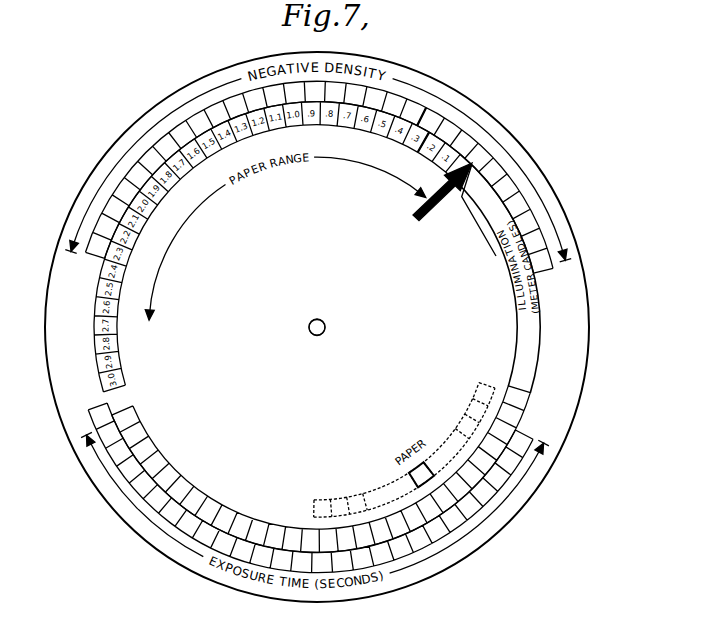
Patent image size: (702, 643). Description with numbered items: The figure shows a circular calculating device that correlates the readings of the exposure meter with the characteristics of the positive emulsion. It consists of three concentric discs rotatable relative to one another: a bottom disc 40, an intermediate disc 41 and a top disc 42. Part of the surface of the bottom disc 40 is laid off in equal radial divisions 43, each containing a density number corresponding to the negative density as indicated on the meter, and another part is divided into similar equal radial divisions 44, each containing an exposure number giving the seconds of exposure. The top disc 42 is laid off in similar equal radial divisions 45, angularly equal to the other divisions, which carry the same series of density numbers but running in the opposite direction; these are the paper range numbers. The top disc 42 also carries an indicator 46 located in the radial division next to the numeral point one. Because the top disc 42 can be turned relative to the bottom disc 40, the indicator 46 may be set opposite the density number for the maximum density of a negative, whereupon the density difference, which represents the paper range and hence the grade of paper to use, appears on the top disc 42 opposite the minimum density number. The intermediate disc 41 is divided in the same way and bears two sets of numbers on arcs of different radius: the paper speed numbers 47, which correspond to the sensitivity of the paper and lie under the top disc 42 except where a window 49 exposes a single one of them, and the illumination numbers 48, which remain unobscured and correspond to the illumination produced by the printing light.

The bottom disc 40 is at (582, 284).
The intermediate disc 41 is at (523, 378).
The top disc 42 is at (494, 352).
The radial divisions 43 is at (532, 217).
The radial divisions 44 is at (518, 471).
The radial divisions 45 is at (436, 132).
The indicator 46 is at (430, 222).
The paper speed numbers 47 is at (467, 413).
The illumination numbers 48 is at (525, 423).
The window 49 is at (412, 470).